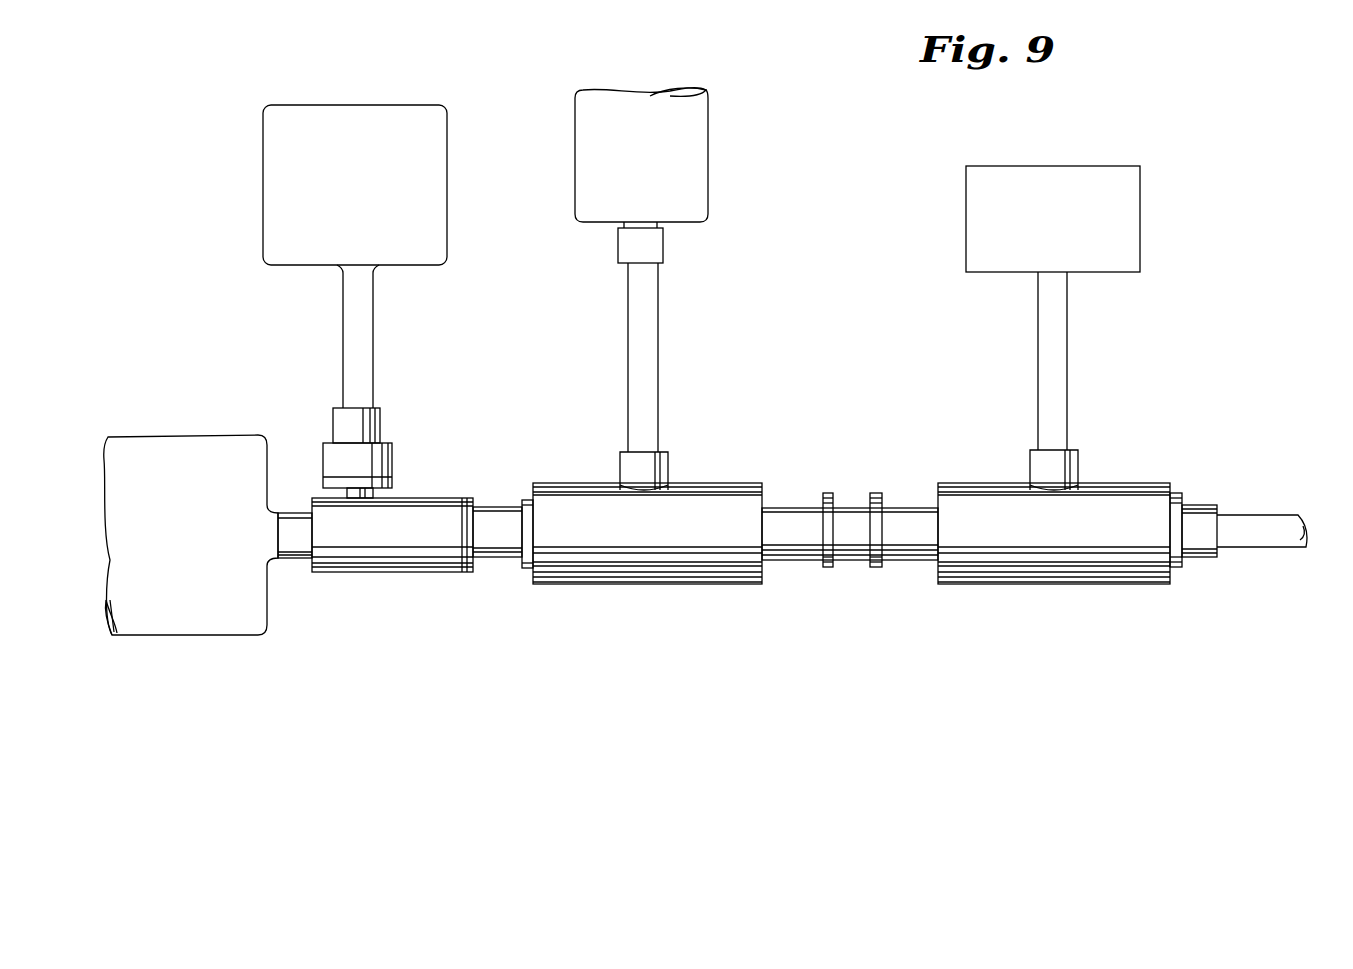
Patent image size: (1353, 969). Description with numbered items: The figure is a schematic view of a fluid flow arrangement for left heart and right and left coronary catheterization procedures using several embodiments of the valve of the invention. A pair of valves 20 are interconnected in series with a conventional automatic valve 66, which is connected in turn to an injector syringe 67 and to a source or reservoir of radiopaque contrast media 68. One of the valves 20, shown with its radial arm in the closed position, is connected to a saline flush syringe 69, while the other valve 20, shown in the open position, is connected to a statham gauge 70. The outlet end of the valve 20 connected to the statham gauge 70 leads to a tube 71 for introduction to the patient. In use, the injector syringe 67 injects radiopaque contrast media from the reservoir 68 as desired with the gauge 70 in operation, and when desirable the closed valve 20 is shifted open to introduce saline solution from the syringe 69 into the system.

The valve 20 is at (692, 555).
The automatic valve 66 is at (427, 548).
The injector syringe 67 is at (223, 450).
The radiopaque contrast media reservoir 68 is at (430, 251).
The saline flush syringe 69 is at (693, 208).
The statham gauge 70 is at (1123, 260).
The tube 71 is at (1268, 537).